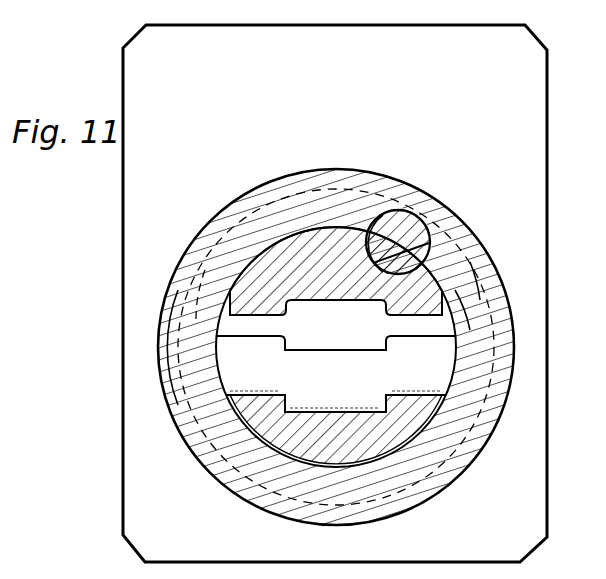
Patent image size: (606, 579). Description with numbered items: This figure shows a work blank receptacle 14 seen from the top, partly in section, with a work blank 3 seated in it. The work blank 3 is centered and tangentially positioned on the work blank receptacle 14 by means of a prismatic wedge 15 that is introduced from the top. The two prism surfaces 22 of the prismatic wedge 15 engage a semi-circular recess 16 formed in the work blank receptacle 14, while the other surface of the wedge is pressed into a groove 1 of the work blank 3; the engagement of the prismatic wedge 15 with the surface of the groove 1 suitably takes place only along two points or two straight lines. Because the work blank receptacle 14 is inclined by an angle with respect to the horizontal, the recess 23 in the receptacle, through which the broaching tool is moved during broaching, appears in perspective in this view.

The groove 1 is at (397, 230).
The work blank 3 is at (465, 442).
The work blank receptacle 14 is at (395, 432).
The prismatic wedge 15 is at (432, 217).
The semi-circular recess 16 is at (380, 270).
The prism surfaces 22 is at (452, 223).
The recess 23 is at (425, 377).